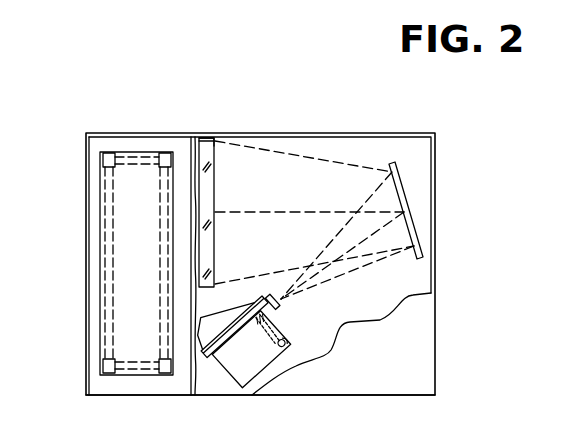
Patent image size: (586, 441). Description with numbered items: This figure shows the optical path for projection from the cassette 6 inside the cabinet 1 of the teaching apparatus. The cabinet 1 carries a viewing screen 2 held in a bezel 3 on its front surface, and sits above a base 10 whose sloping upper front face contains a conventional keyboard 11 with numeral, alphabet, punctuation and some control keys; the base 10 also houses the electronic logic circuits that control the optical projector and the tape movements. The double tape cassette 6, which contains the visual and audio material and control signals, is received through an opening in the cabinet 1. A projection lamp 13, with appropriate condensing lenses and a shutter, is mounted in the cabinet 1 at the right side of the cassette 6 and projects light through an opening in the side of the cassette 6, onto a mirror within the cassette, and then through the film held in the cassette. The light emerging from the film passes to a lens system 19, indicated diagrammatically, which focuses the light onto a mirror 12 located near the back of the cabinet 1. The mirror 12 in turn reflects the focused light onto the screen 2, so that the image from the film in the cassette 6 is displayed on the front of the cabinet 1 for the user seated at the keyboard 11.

The cabinet 1 is at (434, 163).
The viewing screen 2 is at (217, 160).
The bezel 3 is at (205, 143).
The double tape cassette 6 is at (207, 352).
The base 10 is at (140, 396).
The keyboard 11 is at (133, 240).
The mirror 12 is at (413, 218).
The projection lamp 13 is at (288, 350).
The lens system 19 is at (290, 300).